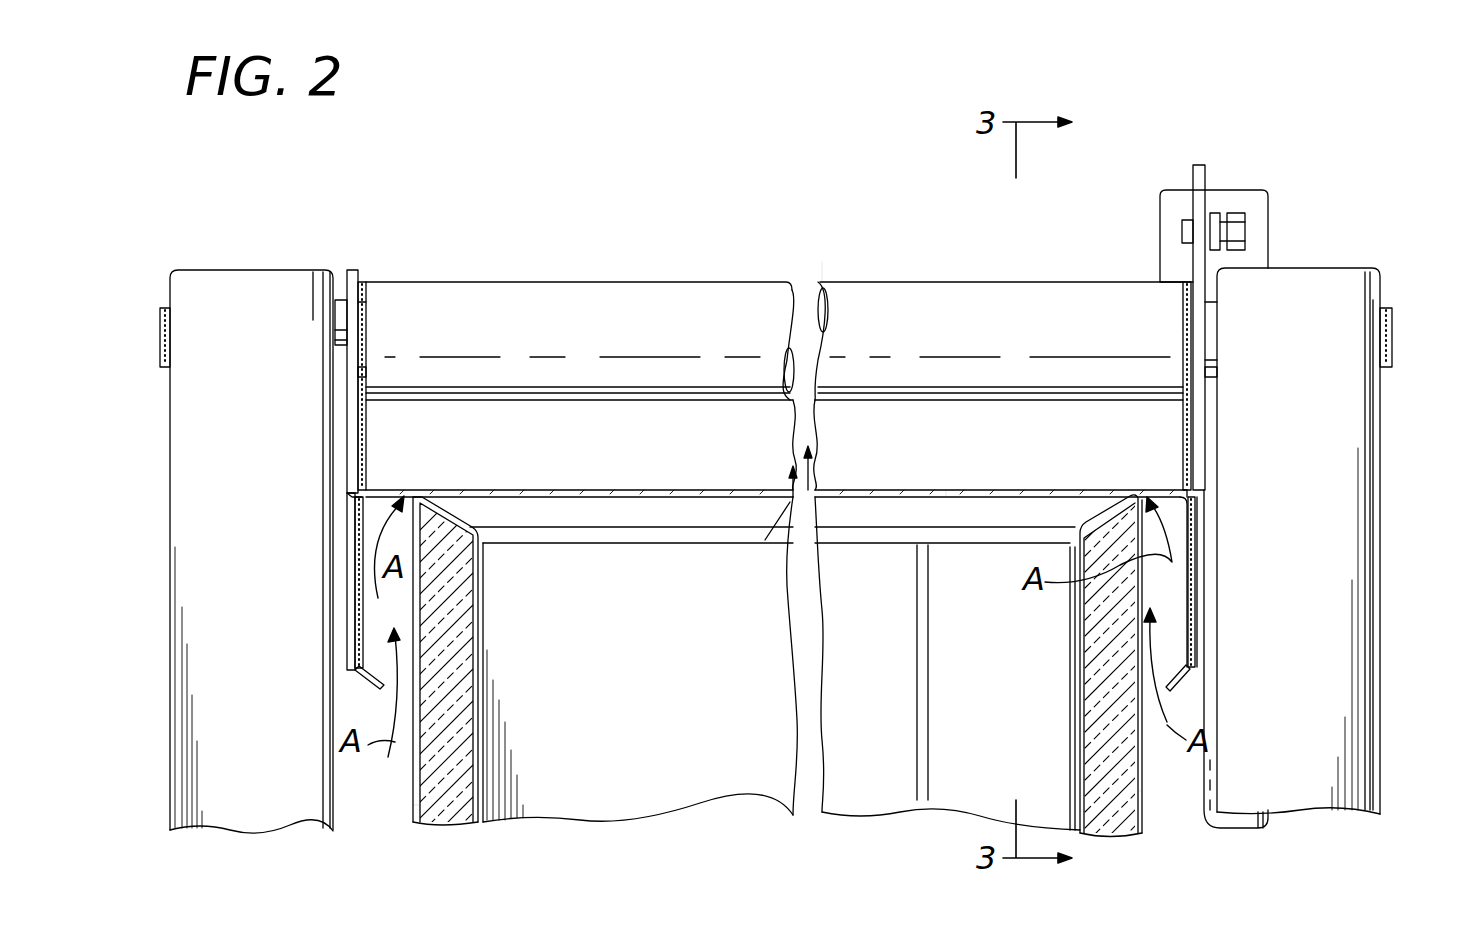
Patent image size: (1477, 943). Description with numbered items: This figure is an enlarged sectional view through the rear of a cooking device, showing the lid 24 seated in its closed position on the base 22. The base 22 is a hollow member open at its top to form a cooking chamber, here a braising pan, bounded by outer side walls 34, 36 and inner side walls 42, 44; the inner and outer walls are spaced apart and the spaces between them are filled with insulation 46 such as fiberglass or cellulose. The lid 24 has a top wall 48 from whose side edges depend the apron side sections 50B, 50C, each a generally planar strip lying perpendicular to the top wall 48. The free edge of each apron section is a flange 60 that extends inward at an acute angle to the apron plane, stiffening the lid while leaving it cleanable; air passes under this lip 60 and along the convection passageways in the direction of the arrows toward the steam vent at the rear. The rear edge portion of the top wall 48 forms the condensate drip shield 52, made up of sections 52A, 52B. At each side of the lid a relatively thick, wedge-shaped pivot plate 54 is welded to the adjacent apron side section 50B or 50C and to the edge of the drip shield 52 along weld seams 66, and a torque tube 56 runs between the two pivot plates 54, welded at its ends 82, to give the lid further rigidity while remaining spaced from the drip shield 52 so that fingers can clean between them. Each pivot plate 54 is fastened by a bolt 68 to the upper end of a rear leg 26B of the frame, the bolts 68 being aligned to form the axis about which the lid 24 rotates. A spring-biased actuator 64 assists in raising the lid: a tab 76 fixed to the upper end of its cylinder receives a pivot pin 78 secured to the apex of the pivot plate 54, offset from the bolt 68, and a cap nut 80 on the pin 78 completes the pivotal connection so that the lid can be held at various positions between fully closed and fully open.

The base 22 is at (653, 768).
The lid 24 is at (657, 480).
The rear leg 26B is at (205, 518).
The outer side wall 34 is at (412, 804).
The outer side wall 36 is at (1140, 792).
The inner side wall 42 is at (478, 718).
The inner side wall 44 is at (1070, 725).
The insulation 46 is at (461, 632).
The top wall 48 is at (946, 492).
The apron side section 50B is at (1198, 597).
The apron side section 50C is at (350, 616).
The condensate drip shield 52 is at (625, 428).
The drip shield section 52A is at (592, 430).
The drip shield section 52B is at (820, 437).
The pivot plate 54 is at (348, 421).
The torque tube 56 is at (822, 285).
The flange 60 is at (375, 685).
The actuator 64 is at (1262, 208).
The weld seam 66 is at (367, 456).
The bolt 68 is at (160, 332).
The tab 76 is at (1215, 212).
The pivot pin 78 is at (1188, 234).
The cap nut 80 is at (1247, 232).
The torque tube end 82 is at (366, 320).